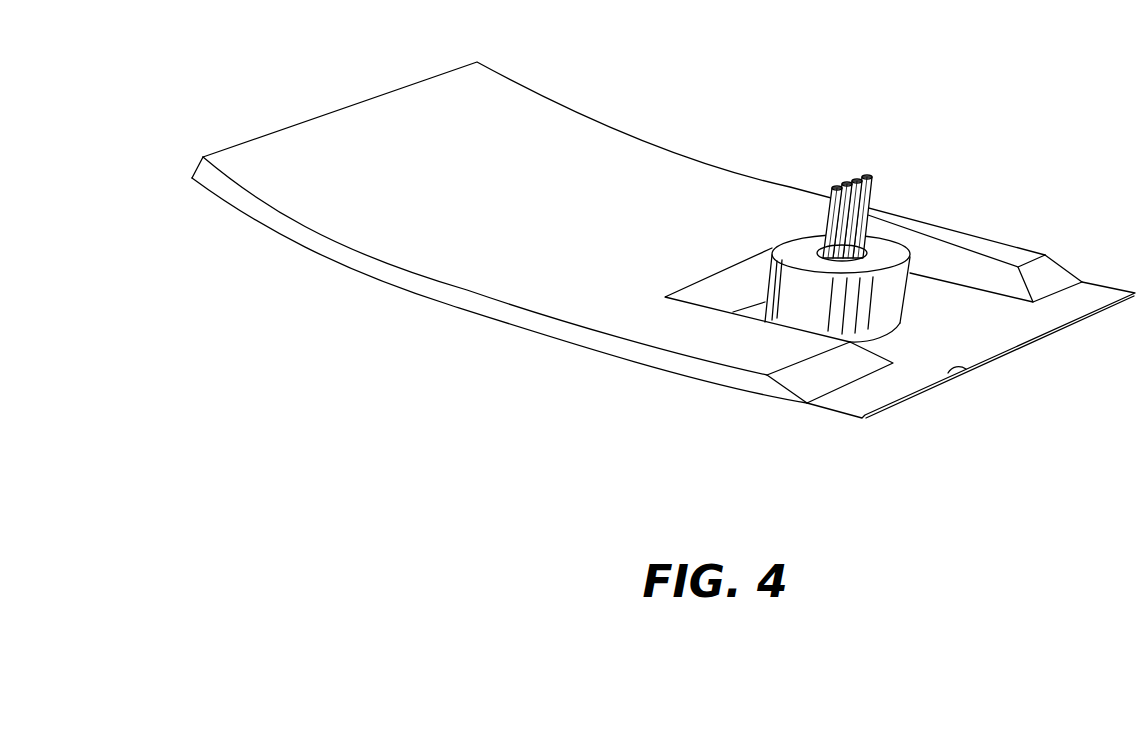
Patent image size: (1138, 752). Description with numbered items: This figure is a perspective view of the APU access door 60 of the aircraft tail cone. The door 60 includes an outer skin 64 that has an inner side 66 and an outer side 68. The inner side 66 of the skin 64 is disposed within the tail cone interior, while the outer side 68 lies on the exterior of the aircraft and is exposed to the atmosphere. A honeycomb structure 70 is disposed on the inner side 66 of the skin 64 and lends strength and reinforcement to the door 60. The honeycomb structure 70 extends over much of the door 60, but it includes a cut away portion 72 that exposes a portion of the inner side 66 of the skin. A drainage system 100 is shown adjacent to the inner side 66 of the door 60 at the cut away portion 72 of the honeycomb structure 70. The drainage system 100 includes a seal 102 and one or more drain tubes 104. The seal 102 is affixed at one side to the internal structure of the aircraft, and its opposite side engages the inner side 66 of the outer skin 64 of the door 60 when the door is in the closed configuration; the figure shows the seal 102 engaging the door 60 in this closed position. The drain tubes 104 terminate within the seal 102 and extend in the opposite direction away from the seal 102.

The APU access door 60 is at (663, 260).
The outer skin 64 is at (983, 367).
The inner side 66 is at (970, 320).
The outer side 68 is at (808, 415).
The honeycomb structure 70 is at (387, 137).
The cut away portion 72 is at (724, 304).
The drainage system 100 is at (797, 247).
The seal 102 is at (780, 280).
The drain tubes 104 is at (837, 178).